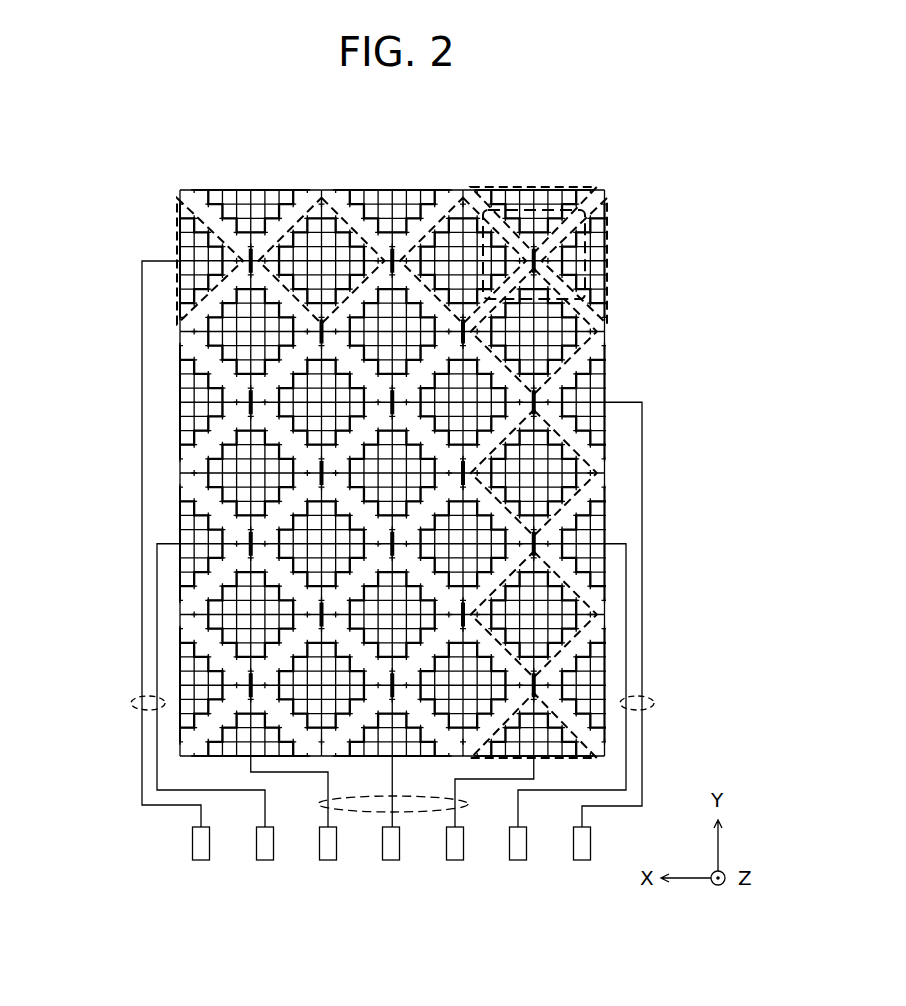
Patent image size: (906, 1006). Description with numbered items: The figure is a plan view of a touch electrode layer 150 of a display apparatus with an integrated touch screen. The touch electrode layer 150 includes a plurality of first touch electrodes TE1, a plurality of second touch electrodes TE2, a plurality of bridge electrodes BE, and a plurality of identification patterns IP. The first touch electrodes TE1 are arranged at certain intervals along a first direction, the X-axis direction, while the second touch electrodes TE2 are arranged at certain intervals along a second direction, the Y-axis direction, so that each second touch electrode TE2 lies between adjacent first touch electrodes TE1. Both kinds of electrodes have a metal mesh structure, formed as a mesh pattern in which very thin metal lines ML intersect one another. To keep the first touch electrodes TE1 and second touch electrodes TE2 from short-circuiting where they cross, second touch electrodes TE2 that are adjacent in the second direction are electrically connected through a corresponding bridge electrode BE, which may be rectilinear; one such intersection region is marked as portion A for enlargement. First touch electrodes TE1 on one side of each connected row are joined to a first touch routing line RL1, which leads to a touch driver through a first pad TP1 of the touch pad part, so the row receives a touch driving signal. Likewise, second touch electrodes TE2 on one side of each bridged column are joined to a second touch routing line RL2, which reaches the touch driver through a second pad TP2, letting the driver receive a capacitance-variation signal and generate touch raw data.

The touch electrode layer 150 is at (158, 162).
The first touch electrodes TE1 is at (312, 191).
The second touch electrodes TE2 is at (538, 187).
The identification patterns IP is at (205, 208).
The metal lines ML is at (590, 242).
The bridge electrode BE is at (540, 264).
The portion A is at (586, 211).
The first touch routing line RL1 is at (131, 703).
The second touch routing line RL2 is at (418, 813).
The first pad TP1 is at (204, 861).
The second pad TP2 is at (329, 861).